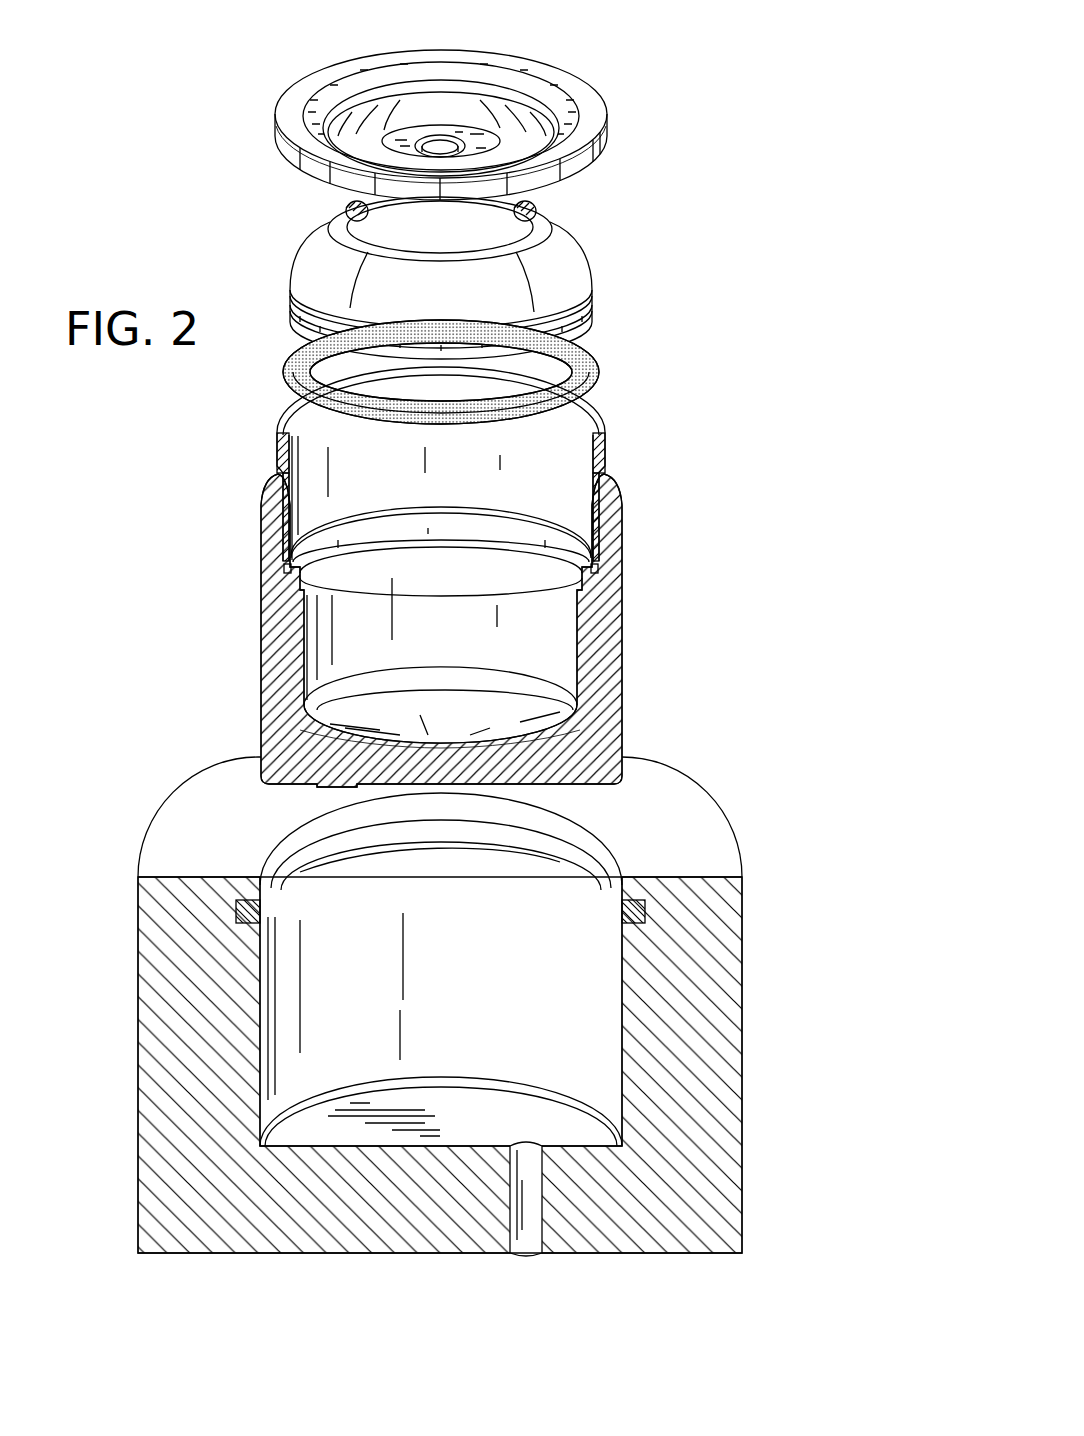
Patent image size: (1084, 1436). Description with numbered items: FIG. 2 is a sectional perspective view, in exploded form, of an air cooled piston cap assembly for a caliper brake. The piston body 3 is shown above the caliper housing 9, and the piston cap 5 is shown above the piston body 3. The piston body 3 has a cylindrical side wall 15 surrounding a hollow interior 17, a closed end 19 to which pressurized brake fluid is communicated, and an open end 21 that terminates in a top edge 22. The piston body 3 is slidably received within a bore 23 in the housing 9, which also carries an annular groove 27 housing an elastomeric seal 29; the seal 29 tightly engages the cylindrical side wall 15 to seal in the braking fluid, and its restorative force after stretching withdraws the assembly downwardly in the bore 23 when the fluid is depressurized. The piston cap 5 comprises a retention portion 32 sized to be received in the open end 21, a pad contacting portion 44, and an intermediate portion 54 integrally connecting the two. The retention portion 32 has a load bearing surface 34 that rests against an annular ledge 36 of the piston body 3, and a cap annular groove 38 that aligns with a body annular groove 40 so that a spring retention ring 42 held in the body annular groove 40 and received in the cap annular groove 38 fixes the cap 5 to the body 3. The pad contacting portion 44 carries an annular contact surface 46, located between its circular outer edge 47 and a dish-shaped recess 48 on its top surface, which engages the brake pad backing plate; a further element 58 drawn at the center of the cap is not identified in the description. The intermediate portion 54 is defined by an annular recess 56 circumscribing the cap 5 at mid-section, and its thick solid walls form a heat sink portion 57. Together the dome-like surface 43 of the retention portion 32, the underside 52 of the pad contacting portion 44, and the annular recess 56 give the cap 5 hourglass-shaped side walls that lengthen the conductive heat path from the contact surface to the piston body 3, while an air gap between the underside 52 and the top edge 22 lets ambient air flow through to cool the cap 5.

The piston body 3 is at (674, 573).
The piston cap 5 is at (672, 170).
The caliper housing 9 is at (170, 1232).
The cylindrical side wall 15 is at (606, 620).
The hollow interior 17 is at (420, 594).
The closed end 19 is at (558, 772).
The open end 21 is at (566, 436).
The top edge 22 is at (600, 415).
The bore 23 is at (622, 1010).
The annular groove 27 is at (246, 910).
The elastomeric seal 29 is at (622, 910).
The retention portion 32 is at (302, 248).
The load bearing surface 34 is at (340, 355).
The annular ledge 36 is at (306, 574).
The cap annular groove 38 is at (583, 305).
The body annular groove 40 is at (585, 565).
The spring retention ring 42 is at (290, 355).
The dome-like surface 43 is at (572, 258).
The pad contacting portion 44 is at (276, 90).
The annular contact surface 46 is at (558, 95).
The circular outer edge 47 is at (606, 150).
The dish-shaped recess 48 is at (510, 100).
The underside 52 is at (330, 190).
The intermediate portion 54 is at (372, 214).
The annular recess 56 is at (534, 208).
The heat sink portion 57 is at (470, 140).
The central opening 58 is at (437, 136).